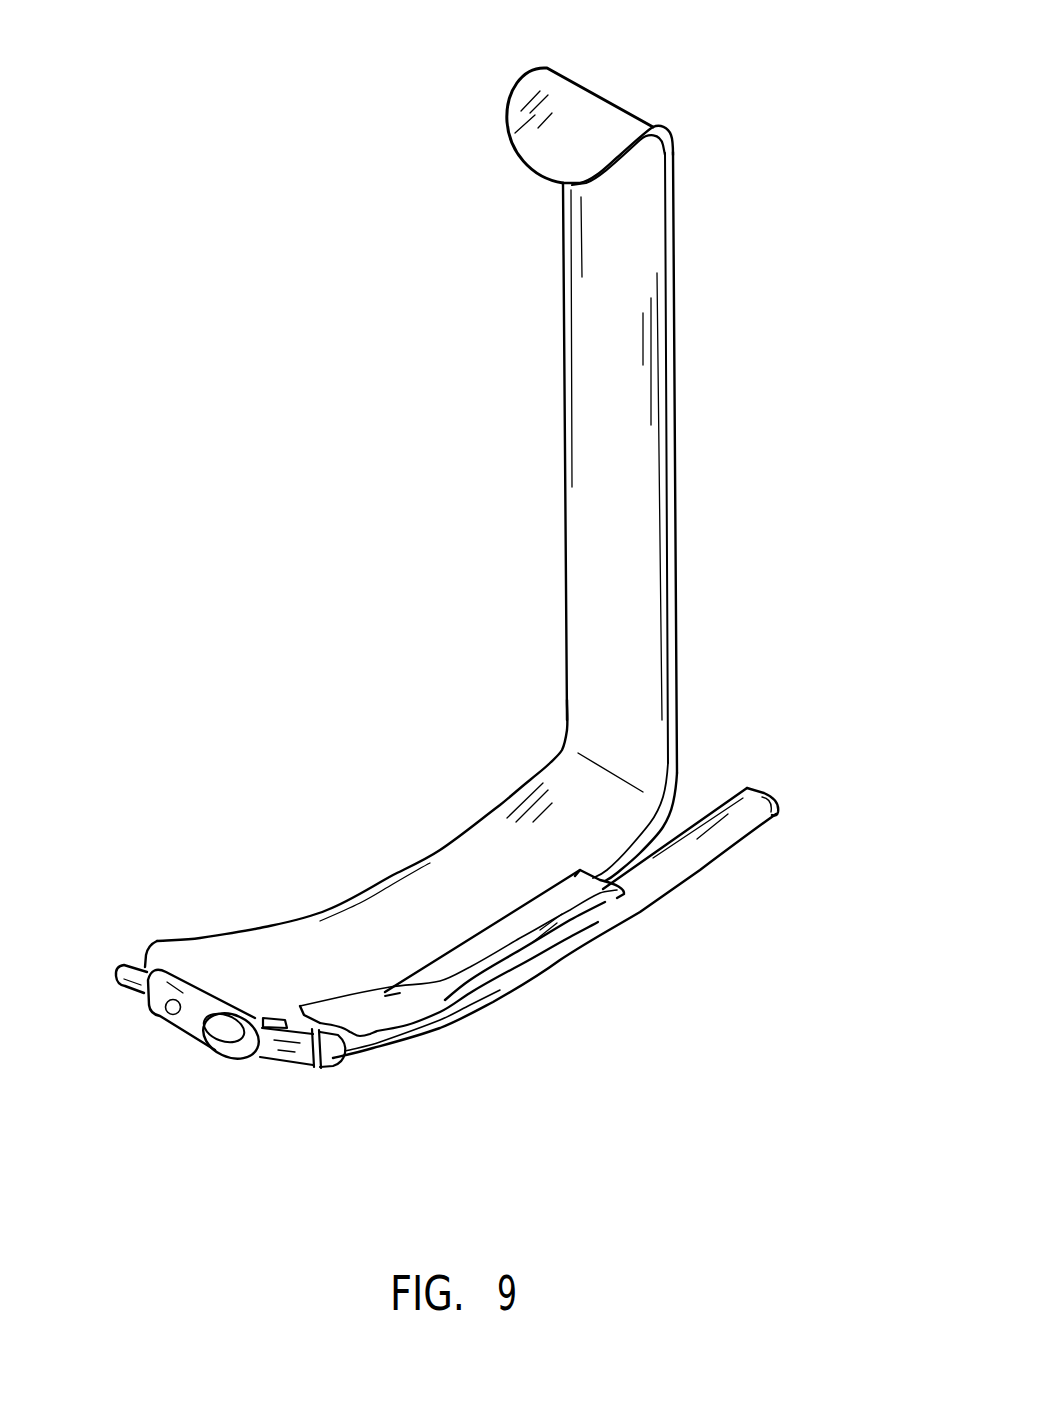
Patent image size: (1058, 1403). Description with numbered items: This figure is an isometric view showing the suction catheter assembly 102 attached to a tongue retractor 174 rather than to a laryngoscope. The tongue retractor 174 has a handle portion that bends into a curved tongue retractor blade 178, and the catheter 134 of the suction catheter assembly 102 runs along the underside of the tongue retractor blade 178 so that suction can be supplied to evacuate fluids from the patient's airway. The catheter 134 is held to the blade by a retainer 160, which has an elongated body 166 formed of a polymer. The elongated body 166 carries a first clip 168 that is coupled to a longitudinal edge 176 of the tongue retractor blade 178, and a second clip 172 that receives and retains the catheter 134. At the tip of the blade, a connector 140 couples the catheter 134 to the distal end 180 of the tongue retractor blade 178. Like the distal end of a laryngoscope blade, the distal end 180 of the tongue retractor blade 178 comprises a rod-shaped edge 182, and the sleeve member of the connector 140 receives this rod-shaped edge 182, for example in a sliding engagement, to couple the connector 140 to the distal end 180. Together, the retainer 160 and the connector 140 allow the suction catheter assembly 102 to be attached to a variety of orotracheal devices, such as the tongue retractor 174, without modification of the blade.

The suction catheter assembly 102 is at (505, 1026).
The catheter 134 is at (672, 877).
The connector 140 is at (229, 1056).
The retainer 160 is at (505, 935).
The elongated body 166 is at (560, 918).
The first clip 168 is at (378, 997).
The second clip 172 is at (390, 1022).
The tongue retractor 174 is at (760, 160).
The longitudinal edge 176 is at (623, 853).
The tongue retractor blade 178 is at (280, 960).
The distal end 180 is at (147, 952).
The rod-shaped edge 182 is at (132, 995).